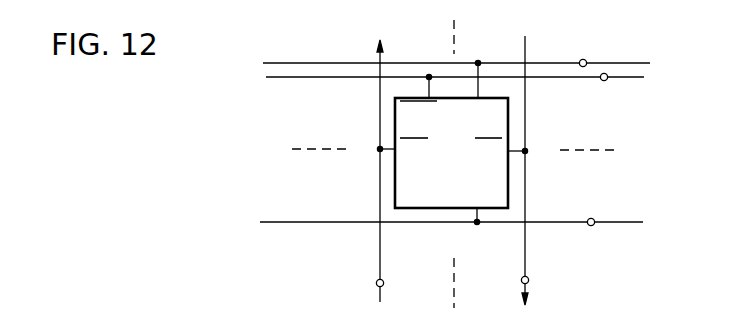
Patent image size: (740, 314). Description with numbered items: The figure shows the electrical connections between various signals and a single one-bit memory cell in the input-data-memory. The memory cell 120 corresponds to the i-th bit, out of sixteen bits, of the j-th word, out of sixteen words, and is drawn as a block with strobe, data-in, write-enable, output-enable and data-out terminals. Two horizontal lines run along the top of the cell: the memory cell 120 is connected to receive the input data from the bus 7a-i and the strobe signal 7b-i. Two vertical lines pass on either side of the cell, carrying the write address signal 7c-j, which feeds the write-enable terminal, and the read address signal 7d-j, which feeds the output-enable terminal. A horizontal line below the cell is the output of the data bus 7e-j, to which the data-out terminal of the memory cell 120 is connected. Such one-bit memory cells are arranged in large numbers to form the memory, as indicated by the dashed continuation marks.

The memory cell 120 is at (395, 127).
The input data bus 7a-i is at (580, 59).
The strobe signal 7b-i is at (604, 81).
The write address signal 7c-j is at (376, 283).
The read address signal 7d-j is at (529, 280).
The output data bus 7e-j is at (591, 218).